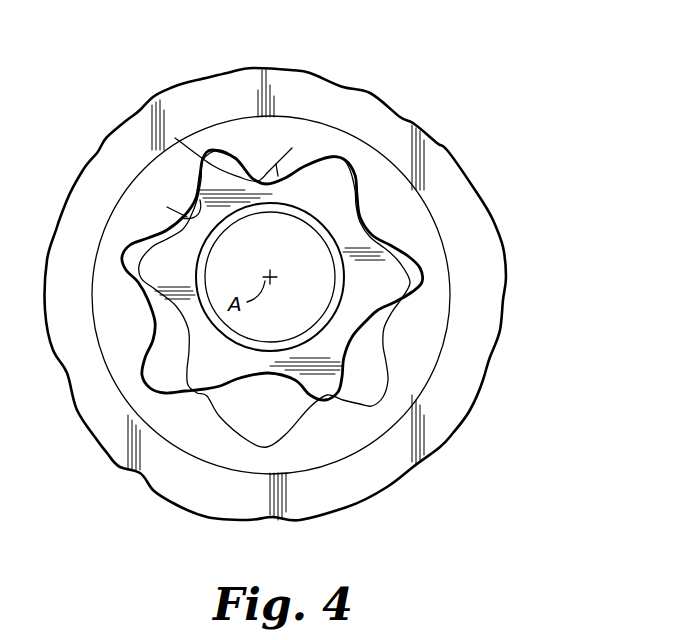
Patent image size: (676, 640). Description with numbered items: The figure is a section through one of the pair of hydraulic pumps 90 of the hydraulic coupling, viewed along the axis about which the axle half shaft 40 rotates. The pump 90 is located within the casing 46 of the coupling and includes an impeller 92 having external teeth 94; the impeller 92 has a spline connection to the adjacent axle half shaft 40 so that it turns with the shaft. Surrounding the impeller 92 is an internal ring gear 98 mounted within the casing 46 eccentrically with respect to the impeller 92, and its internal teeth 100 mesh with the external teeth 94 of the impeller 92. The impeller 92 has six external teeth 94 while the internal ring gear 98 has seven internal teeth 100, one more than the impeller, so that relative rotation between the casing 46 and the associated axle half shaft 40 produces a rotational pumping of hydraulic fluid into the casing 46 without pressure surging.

The axle half shaft 40 is at (308, 250).
The casing 46 is at (452, 431).
The hydraulic pump 90 is at (452, 273).
The impeller 92 is at (371, 318).
The external teeth 94 is at (206, 378).
The internal ring gear 98 is at (281, 147).
The internal teeth 100 is at (197, 193).